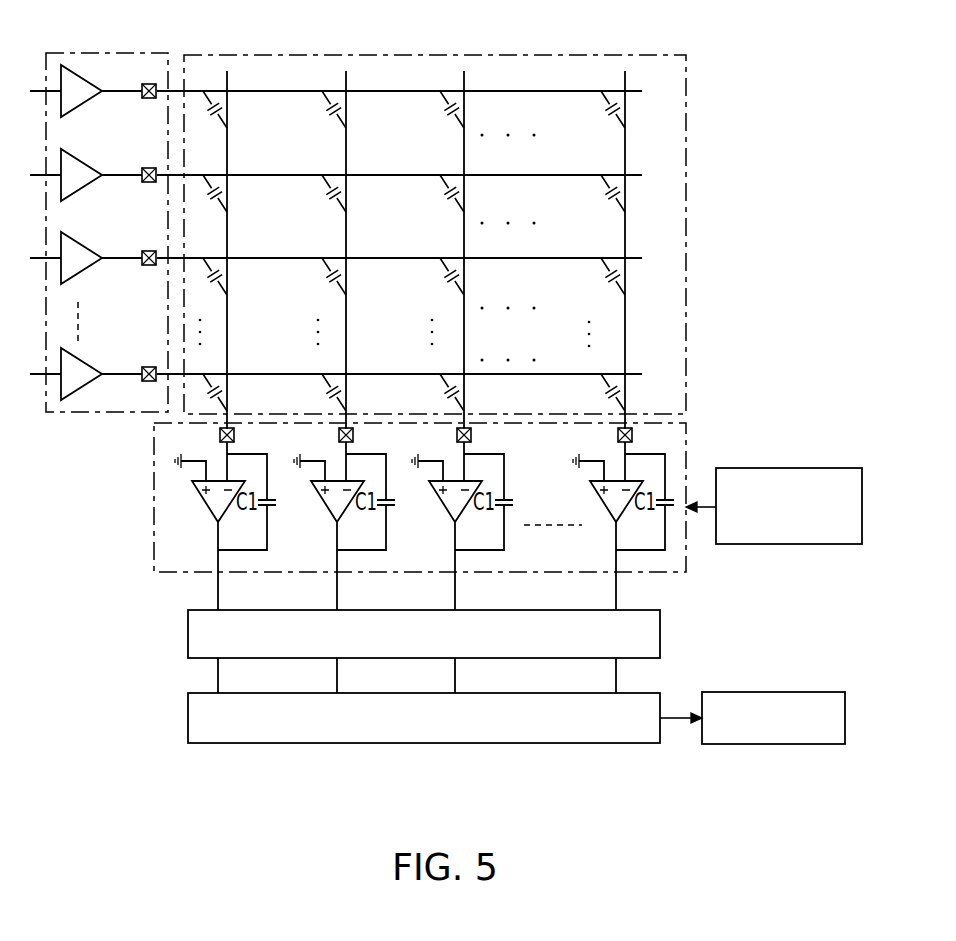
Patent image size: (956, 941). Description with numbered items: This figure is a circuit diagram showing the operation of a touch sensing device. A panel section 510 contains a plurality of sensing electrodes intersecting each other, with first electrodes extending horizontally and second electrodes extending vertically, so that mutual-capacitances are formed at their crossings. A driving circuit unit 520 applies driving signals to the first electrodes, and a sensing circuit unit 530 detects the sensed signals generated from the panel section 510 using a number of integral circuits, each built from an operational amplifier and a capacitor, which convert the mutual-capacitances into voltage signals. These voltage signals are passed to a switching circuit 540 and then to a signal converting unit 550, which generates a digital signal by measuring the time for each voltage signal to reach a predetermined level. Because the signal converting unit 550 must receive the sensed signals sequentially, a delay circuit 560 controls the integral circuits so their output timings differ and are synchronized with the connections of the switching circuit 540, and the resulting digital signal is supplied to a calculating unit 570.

The panel section 510 is at (686, 133).
The driving circuit unit 520 is at (76, 413).
The sensing circuit unit 530 is at (154, 504).
The switching circuit 540 is at (188, 632).
The signal converting unit 550 is at (188, 712).
The delay circuit 560 is at (757, 468).
The calculating unit 570 is at (760, 692).